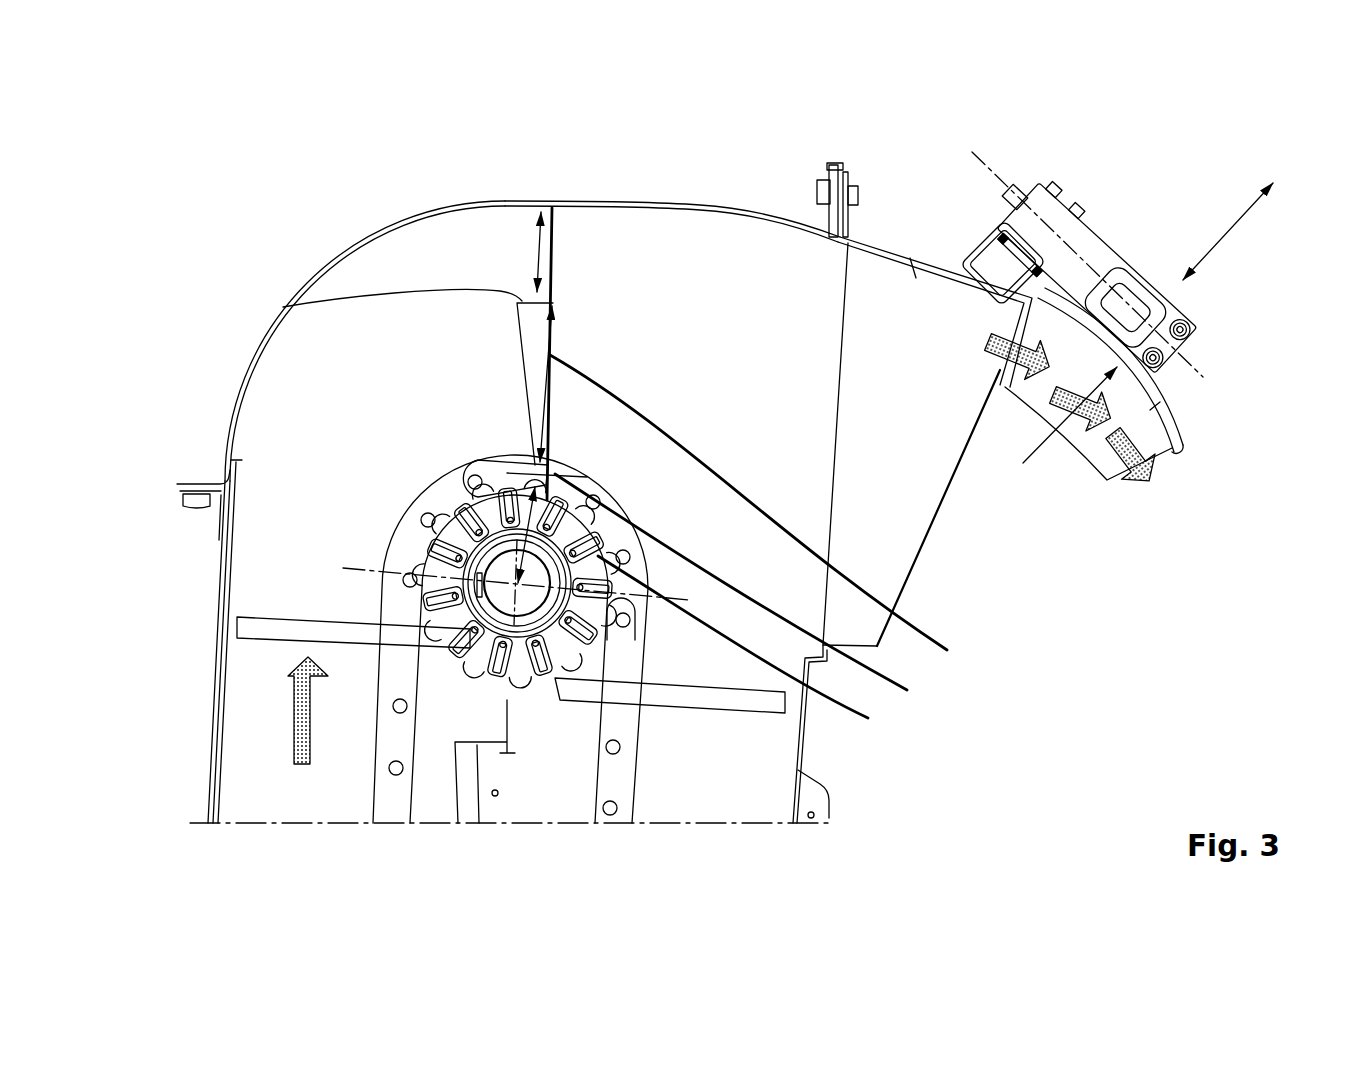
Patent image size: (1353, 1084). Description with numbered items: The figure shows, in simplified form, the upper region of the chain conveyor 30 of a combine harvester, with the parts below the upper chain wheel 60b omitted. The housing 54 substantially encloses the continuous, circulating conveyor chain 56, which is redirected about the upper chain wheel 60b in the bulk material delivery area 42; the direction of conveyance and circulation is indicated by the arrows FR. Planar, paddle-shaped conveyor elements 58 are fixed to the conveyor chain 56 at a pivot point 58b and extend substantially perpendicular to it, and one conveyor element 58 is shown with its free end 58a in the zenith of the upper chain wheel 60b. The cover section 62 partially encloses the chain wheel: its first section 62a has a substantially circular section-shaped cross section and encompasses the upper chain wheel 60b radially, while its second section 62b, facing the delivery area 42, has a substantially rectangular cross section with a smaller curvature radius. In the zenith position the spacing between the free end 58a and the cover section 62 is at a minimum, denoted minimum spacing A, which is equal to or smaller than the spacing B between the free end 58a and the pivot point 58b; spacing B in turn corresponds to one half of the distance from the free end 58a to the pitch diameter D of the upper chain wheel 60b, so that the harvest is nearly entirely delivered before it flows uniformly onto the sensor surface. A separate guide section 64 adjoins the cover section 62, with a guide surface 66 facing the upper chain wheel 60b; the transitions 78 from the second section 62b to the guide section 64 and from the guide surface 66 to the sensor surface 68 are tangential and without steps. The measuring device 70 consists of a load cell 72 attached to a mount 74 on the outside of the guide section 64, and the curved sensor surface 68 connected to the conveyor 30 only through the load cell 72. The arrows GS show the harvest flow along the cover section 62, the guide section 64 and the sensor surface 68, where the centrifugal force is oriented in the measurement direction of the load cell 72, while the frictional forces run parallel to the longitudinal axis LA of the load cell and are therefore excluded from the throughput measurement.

The conveyor 30 is at (287, 272).
The cover section 62 is at (427, 204).
The first section 62a is at (362, 237).
The second section 62b is at (601, 198).
The guide section 64 is at (882, 228).
The guide surface 66 is at (908, 268).
The sensor surface 68 is at (1153, 448).
The measuring device 70 is at (1162, 215).
The load cell 72 is at (1088, 240).
The mount 74 is at (973, 246).
The transition 78 is at (833, 247).
The bulk material delivery area 42 is at (851, 441).
The housing 54 is at (207, 720).
The conveyor chain 56 is at (390, 800).
The conveyor element 58 is at (280, 630).
The free end 58a is at (600, 299).
The pivot point 58b is at (752, 592).
The upper chain wheel 60b is at (423, 597).
The minimum spacing A is at (537, 247).
The spacing B is at (754, 490).
The pitch diameter D is at (700, 606).
The longitudinal axis LA is at (1003, 190).
The direction of conveyance FR is at (290, 690).
The harvest flow GS is at (1015, 360).